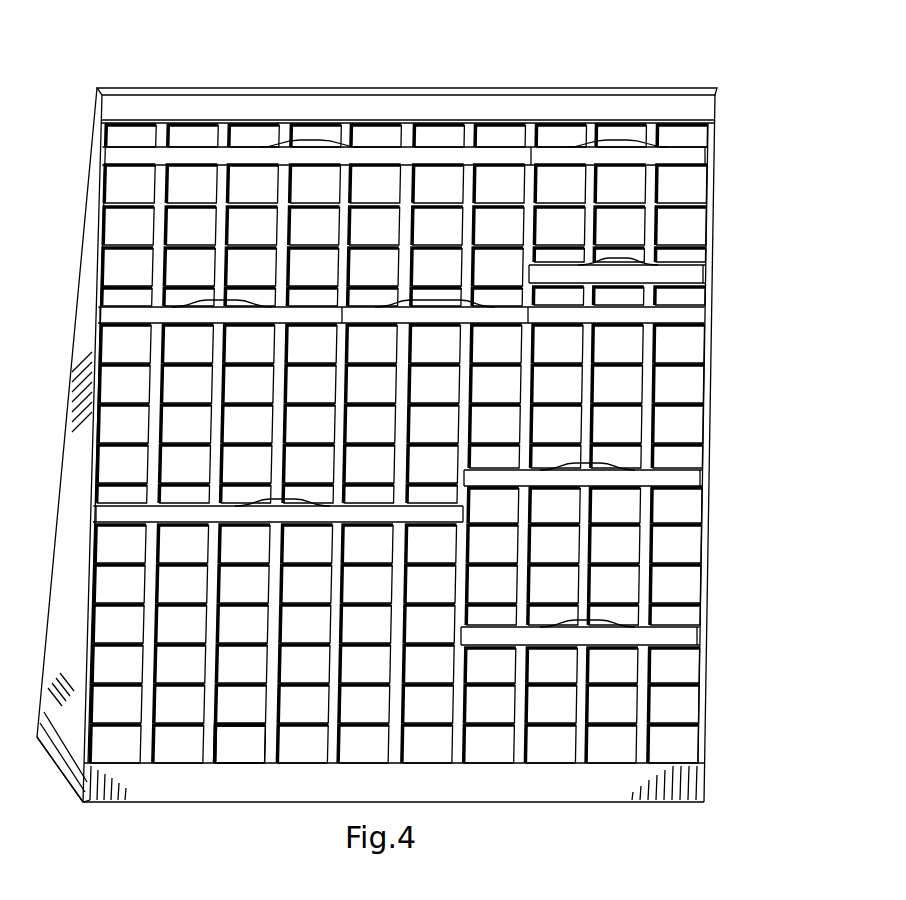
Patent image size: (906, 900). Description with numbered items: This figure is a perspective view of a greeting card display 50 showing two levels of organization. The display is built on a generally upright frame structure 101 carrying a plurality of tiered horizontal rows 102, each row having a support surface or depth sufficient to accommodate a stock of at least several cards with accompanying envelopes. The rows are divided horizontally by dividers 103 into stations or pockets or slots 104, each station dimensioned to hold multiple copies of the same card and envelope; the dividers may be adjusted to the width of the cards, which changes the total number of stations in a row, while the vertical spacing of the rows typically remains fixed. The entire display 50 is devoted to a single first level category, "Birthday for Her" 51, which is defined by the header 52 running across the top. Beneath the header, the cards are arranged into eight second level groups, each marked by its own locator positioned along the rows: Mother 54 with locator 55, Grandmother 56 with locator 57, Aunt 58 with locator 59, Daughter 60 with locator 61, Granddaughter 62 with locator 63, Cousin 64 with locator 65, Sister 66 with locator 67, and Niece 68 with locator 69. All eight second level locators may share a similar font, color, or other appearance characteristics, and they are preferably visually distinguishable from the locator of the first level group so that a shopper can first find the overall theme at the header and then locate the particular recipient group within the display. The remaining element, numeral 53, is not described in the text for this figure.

The display 50 is at (425, 77).
The first level category "Birthday for Her" 51 is at (728, 95).
The header 52 is at (707, 112).
The right side frame member 53 is at (728, 133).
The Mother second level group 54 is at (90, 157).
The Mother locator 55 is at (112, 157).
The Grandmother second level group 56 is at (729, 158).
The Grandmother locator 57 is at (687, 158).
The Aunt second level group 58 is at (724, 273).
The Aunt locator 59 is at (700, 278).
The Daughter second level group 60 is at (84, 316).
The Daughter locator 61 is at (100, 316).
The Granddaughter second level group 62 is at (539, 312).
The Granddaughter locator 63 is at (498, 316).
The Cousin second level group 64 is at (722, 478).
The Cousin locator 65 is at (676, 482).
The Sister second level group 66 is at (86, 518).
The Sister locator 67 is at (103, 516).
The Niece second level group 68 is at (722, 632).
The Niece locator 69 is at (680, 640).
The frame structure 101 is at (57, 672).
The tiered horizontal rows 102 is at (83, 744).
The dividers 103 is at (152, 758).
The stations or pockets or slots 104 is at (240, 748).